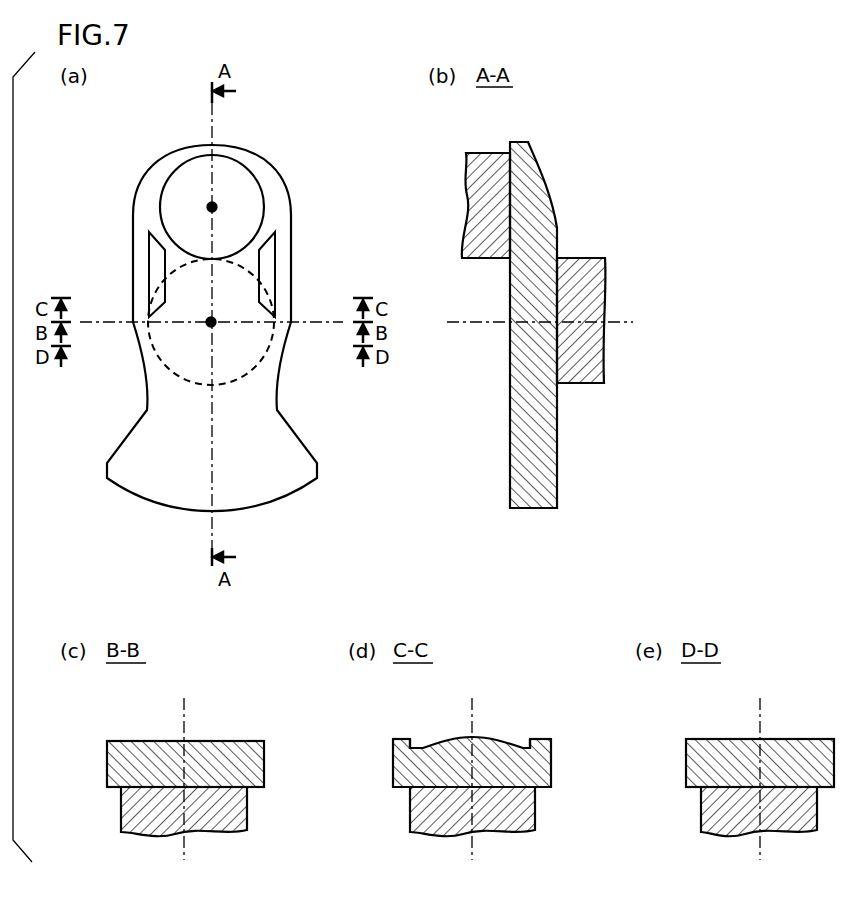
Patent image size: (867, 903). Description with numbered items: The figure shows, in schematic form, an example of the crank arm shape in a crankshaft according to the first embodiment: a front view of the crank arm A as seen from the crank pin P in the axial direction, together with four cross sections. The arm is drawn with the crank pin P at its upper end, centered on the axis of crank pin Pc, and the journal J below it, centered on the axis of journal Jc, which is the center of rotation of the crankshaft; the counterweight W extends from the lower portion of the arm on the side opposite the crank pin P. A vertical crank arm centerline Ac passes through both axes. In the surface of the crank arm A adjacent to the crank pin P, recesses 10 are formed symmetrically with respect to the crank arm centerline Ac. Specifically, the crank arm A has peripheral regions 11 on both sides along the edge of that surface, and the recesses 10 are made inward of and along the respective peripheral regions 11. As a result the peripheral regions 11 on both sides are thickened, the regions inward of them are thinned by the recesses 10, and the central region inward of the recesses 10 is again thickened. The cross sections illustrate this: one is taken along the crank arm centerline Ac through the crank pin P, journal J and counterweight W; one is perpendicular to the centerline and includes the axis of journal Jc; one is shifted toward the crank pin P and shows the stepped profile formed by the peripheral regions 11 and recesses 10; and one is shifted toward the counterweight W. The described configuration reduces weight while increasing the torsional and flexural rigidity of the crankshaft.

The recess 10 is at (155, 268).
The peripheral region 11 is at (140, 248).
The crank arm A is at (444, 451).
The crank pin P is at (205, 150).
The journal J is at (147, 345).
The counterweight W is at (133, 483).
The axis of crank pin Pc is at (211, 206).
The crank arm centerline Ac is at (214, 184).
The axis of journal Jc is at (211, 322).